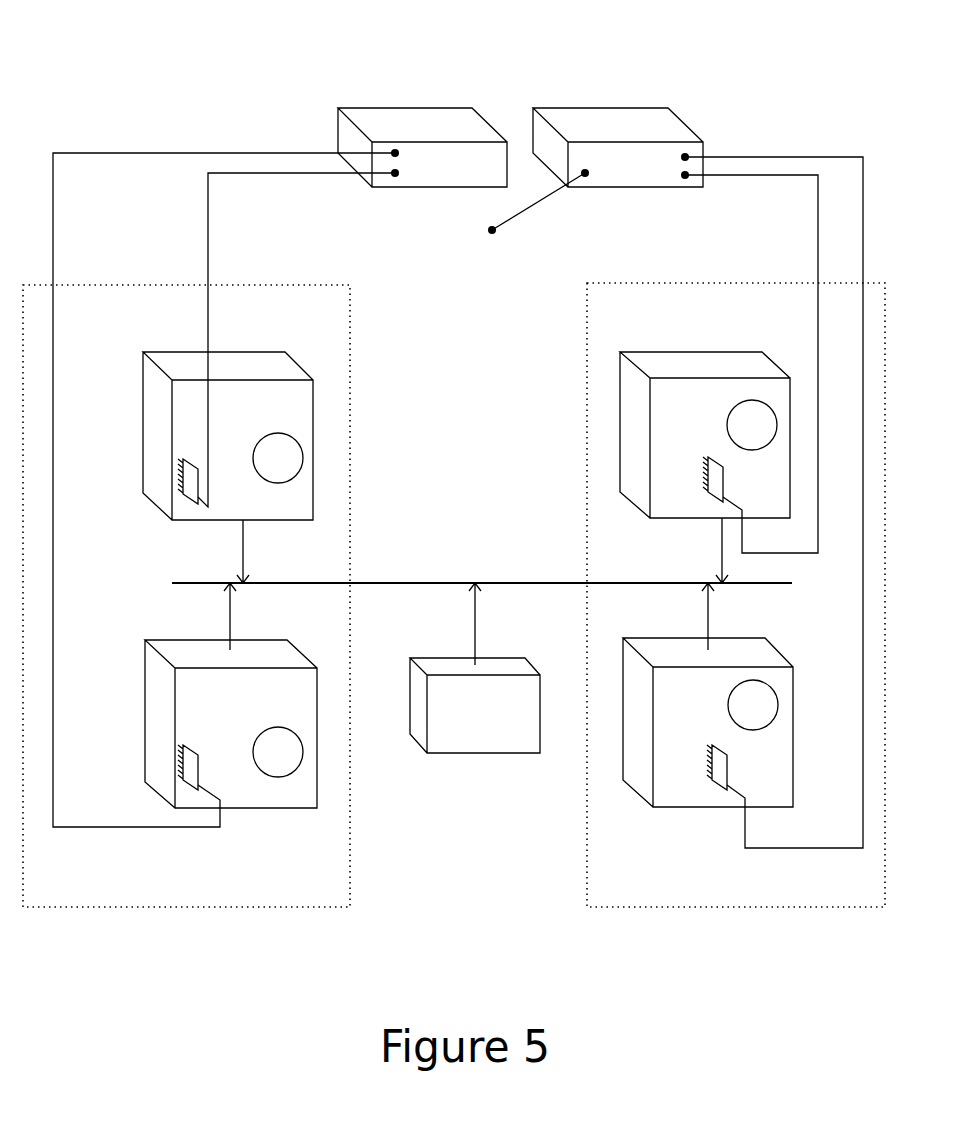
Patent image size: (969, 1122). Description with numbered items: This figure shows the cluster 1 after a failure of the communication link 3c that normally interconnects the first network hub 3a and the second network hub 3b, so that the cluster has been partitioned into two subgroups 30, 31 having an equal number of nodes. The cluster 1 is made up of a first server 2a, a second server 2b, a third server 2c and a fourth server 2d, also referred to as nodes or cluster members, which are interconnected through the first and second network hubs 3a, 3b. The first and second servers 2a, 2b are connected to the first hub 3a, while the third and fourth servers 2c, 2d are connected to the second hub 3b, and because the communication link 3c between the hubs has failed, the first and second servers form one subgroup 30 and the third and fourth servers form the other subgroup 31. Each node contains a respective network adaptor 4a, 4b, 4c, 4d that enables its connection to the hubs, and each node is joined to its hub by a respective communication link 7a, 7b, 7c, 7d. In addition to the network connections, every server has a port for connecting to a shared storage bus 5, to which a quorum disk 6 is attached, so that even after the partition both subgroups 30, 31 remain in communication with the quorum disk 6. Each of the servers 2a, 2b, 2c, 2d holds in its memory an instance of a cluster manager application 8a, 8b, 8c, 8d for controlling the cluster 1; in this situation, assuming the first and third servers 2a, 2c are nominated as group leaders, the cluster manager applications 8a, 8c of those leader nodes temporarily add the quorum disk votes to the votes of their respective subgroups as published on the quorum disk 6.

The cluster 1 is at (122, 87).
The first server 2a is at (228, 436).
The second server 2b is at (231, 724).
The third server 2c is at (705, 435).
The fourth server 2d is at (708, 722).
The first network hub 3a is at (422, 169).
The second network hub 3b is at (618, 169).
The communication link 3c is at (538, 212).
The network adaptor 4a is at (213, 481).
The network adaptor 4b is at (209, 768).
The network adaptor 4c is at (697, 479).
The network adaptor 4d is at (738, 767).
The shared storage bus 5 is at (482, 591).
The quorum disk 6 is at (479, 692).
The communication link 7a is at (278, 340).
The communication link 7b is at (224, 490).
The communication link 7c is at (751, 364).
The communication link 7d is at (774, 502).
The cluster manager application 8a is at (278, 458).
The cluster manager application 8b is at (278, 752).
The cluster manager application 8c is at (752, 425).
The cluster manager application 8d is at (753, 705).
The subgroup 30 is at (315, 343).
The subgroup 31 is at (605, 317).